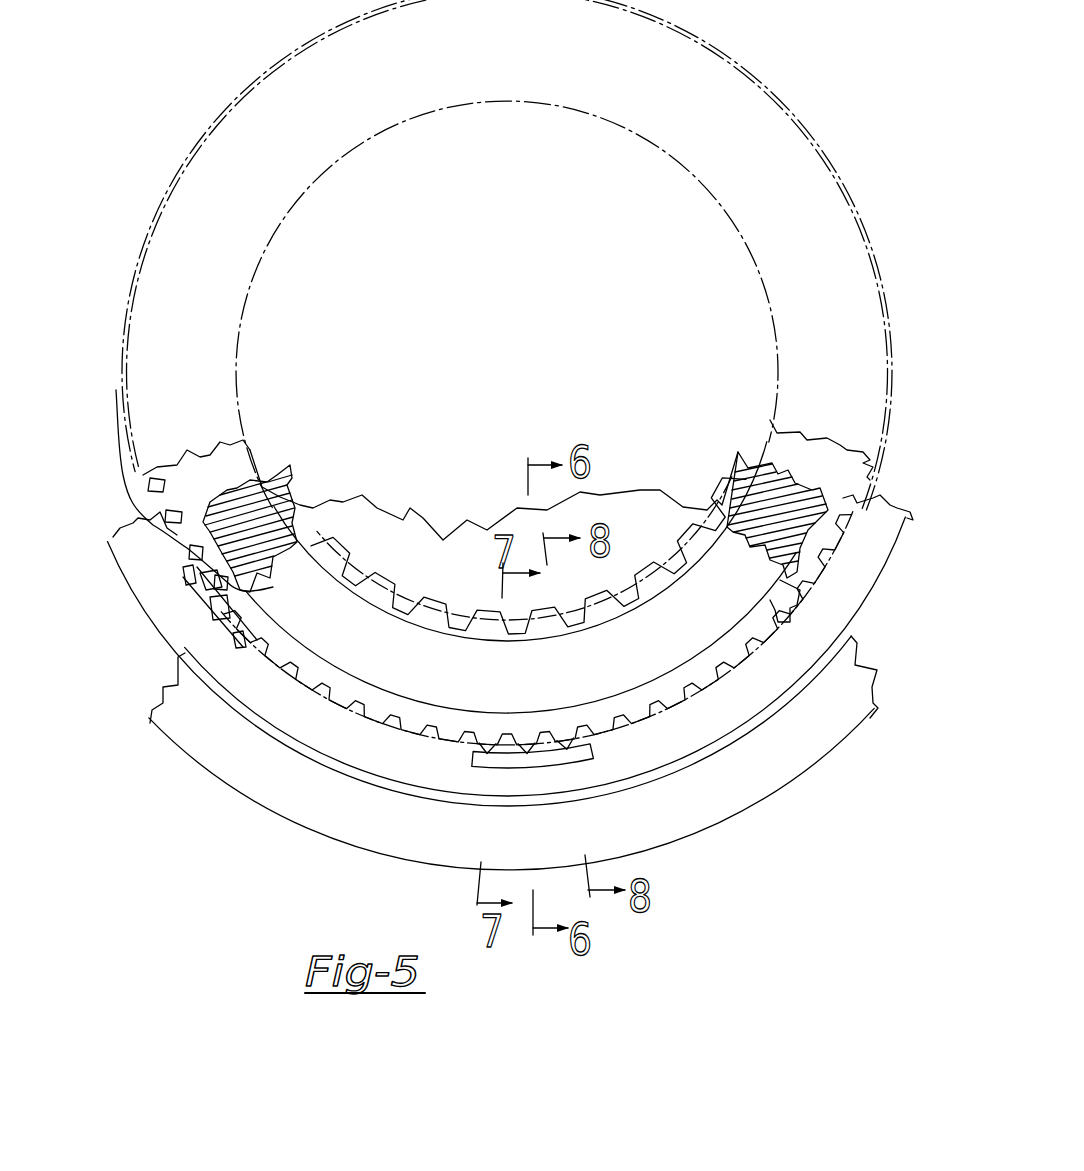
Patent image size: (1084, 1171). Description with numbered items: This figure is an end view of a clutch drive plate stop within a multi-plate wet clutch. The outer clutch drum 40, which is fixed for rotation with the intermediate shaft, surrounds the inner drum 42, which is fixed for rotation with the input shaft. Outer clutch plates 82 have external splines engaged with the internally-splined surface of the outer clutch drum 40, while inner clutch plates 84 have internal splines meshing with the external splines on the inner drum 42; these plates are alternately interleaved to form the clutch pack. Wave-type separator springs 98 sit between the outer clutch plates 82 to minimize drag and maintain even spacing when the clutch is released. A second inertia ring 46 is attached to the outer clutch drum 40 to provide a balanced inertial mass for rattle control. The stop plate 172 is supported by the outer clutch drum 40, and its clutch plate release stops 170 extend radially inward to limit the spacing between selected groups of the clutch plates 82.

The outer clutch drum 40 is at (780, 685).
The inner drum 42 is at (377, 537).
The second inertia ring 46 is at (760, 773).
The outer clutch plates 82 is at (200, 475).
The inner clutch plates 84 is at (820, 563).
The separator springs 98 is at (213, 583).
The clutch plate release stops 170 is at (492, 743).
The stop plate 172 is at (563, 755).